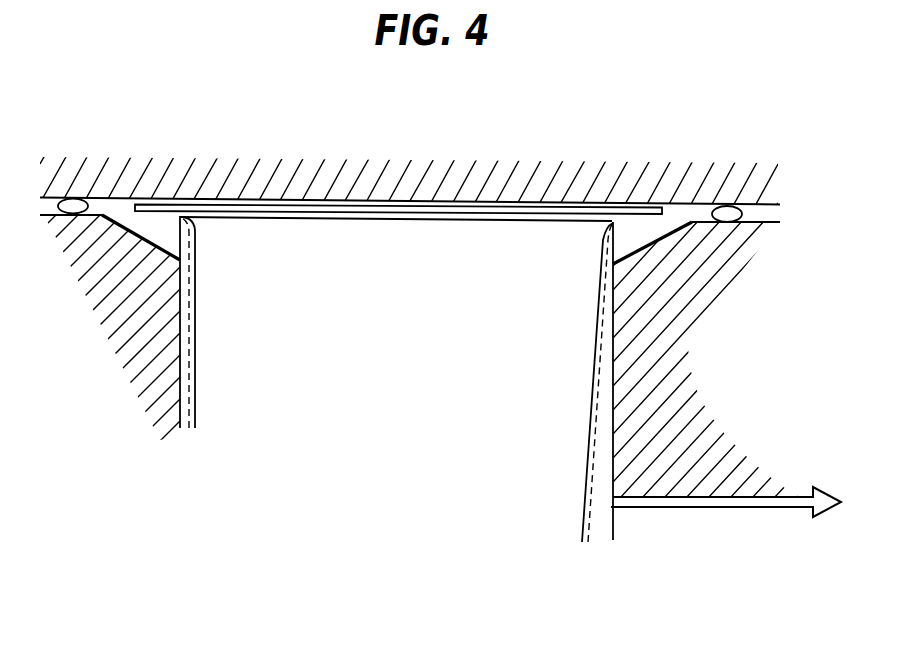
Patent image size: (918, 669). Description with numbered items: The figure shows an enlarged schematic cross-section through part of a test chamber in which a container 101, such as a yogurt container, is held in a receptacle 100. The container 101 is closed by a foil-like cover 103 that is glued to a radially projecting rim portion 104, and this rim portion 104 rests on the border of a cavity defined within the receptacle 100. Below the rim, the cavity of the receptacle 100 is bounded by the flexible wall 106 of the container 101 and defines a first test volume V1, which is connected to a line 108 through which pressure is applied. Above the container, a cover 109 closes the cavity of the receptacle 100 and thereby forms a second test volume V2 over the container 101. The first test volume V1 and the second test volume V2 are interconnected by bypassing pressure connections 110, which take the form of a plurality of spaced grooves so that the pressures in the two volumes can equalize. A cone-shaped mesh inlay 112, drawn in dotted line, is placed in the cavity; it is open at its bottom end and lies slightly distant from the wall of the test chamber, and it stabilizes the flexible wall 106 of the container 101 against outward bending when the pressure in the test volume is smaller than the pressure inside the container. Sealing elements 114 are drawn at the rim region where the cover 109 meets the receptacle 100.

The receptacle 100 is at (140, 300).
The container 101 is at (400, 356).
The foil-like cover 103 is at (353, 194).
The rim portion 104 is at (647, 223).
The flexible wall 106 is at (196, 377).
The line 108 is at (690, 509).
The cover 109 is at (226, 142).
The bypassing pressure connections 110 is at (138, 225).
The cone-shaped mesh inlay 112 is at (600, 367).
The left seal ring 114 is at (78, 199).
The first test volume V1 is at (174, 402).
The second test volume V2 is at (408, 202).